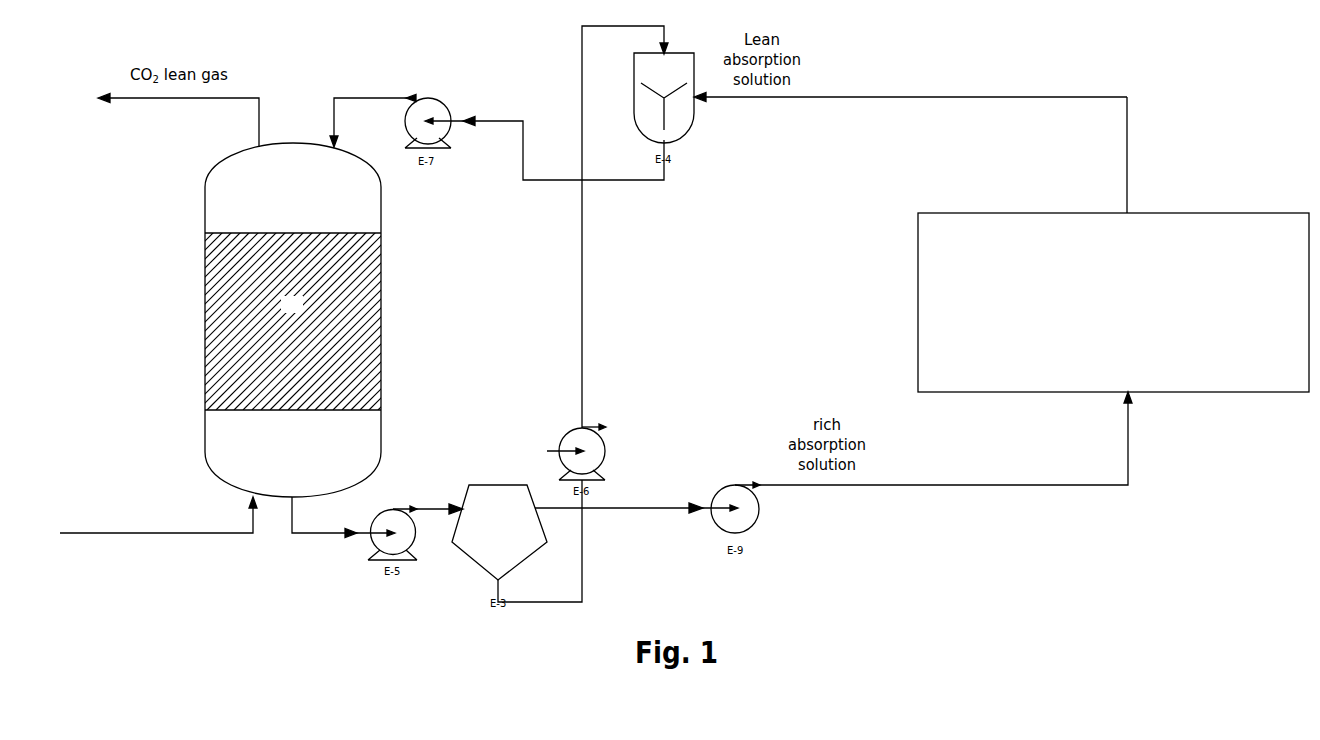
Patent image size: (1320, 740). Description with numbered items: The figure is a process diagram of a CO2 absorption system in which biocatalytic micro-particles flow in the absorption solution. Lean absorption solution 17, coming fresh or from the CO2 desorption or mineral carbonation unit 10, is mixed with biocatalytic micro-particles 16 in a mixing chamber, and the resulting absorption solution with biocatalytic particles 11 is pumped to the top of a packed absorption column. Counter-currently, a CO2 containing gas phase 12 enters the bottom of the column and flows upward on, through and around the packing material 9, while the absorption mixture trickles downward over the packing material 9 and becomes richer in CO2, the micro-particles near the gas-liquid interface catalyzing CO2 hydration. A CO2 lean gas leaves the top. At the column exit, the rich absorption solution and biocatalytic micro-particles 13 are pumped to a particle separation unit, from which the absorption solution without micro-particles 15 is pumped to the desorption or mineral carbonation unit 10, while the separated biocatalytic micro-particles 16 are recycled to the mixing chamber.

The packing material 9 is at (289, 320).
The CO2 desorption process or mineral carbonation unit 10 is at (1113, 302).
The absorption solution with biocatalytic particles 11 is at (544, 134).
The CO2 containing gas phase 12 is at (158, 530).
The rich absorption solution and biocatalytic micro-particles 13 is at (339, 536).
The absorption solution without micro-particles 15 is at (636, 495).
The biocatalytic micro-particles 16 is at (578, 541).
The lean absorption solution 17 is at (910, 136).